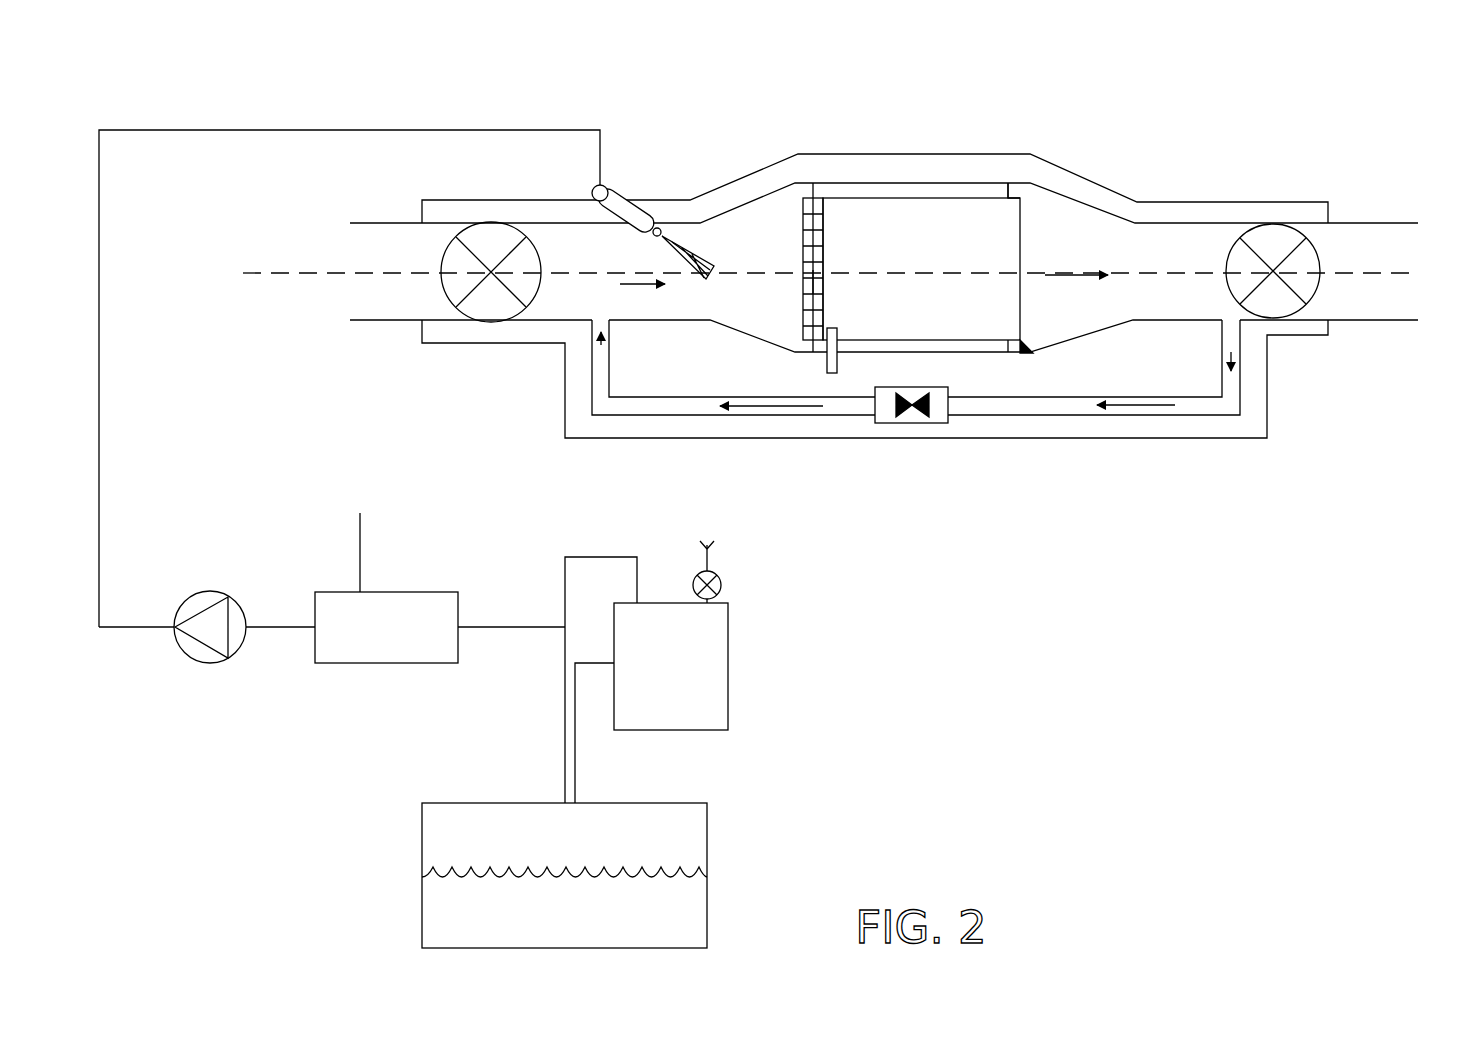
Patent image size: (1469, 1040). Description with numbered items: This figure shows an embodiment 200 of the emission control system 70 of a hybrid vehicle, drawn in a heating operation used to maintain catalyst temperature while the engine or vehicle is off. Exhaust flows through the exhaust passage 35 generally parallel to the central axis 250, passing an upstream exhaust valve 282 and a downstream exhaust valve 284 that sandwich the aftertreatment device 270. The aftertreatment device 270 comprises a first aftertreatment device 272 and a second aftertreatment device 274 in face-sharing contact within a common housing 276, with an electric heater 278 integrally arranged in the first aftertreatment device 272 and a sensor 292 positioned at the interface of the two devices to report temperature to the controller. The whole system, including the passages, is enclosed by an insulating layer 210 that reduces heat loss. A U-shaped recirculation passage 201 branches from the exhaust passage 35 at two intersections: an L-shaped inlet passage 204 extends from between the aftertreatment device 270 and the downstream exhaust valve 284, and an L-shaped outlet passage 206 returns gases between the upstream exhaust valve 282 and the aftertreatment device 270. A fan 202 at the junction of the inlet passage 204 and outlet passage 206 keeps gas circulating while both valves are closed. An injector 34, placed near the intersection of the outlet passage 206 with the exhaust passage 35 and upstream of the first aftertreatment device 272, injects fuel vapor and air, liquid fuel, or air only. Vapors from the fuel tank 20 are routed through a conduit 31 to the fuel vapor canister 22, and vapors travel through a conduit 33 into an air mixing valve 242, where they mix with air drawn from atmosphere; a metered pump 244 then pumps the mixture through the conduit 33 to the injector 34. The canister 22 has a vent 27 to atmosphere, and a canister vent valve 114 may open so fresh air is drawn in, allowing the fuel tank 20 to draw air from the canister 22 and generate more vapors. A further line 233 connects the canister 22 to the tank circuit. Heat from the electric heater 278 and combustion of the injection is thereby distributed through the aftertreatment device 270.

The embodiment 200 is at (1402, 63).
The emission control system 70 is at (1297, 131).
The insulating layer 210 is at (1010, 154).
The exhaust passage 35 is at (1398, 223).
The injector 34 is at (610, 188).
The central axis 250 is at (251, 271).
The upstream exhaust valve 282 is at (457, 238).
The downstream exhaust valve 284 is at (1306, 240).
The first aftertreatment device 272 is at (803, 208).
The second aftertreatment device 274 is at (916, 267).
The common housing 276 is at (1010, 190).
The electric heater 278 is at (818, 282).
The aftertreatment device 270 is at (1031, 348).
The sensor 292 is at (827, 362).
The recirculation passage 201 is at (636, 370).
The outlet passage 206 is at (713, 395).
The inlet passage 204 is at (1143, 397).
The fan 202 is at (935, 387).
The metered pump 244 is at (222, 592).
The air mixing valve 242 is at (435, 592).
The conduit 33 is at (540, 625).
The conduit 31 is at (575, 557).
The conduit 233 is at (585, 662).
The fuel vapor canister 22 is at (720, 732).
The canister vent valve 114 is at (700, 574).
The vent 27 is at (716, 548).
The fuel tank 20 is at (437, 803).